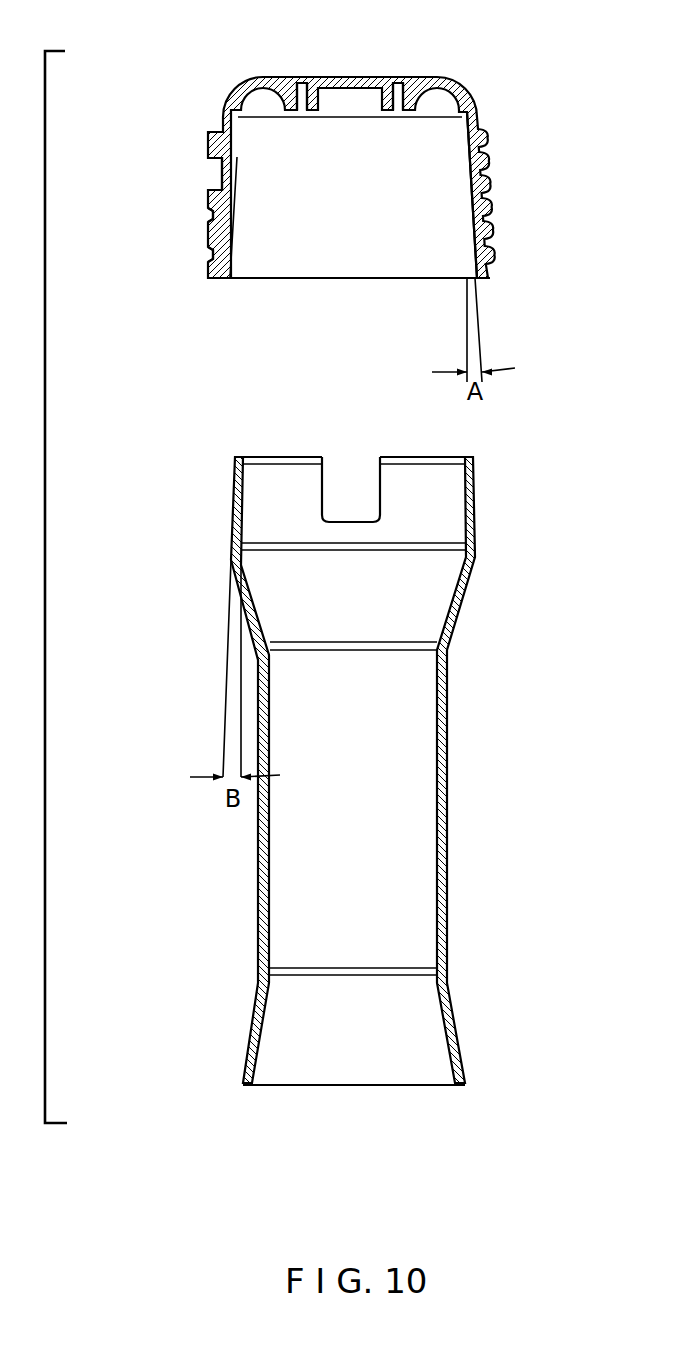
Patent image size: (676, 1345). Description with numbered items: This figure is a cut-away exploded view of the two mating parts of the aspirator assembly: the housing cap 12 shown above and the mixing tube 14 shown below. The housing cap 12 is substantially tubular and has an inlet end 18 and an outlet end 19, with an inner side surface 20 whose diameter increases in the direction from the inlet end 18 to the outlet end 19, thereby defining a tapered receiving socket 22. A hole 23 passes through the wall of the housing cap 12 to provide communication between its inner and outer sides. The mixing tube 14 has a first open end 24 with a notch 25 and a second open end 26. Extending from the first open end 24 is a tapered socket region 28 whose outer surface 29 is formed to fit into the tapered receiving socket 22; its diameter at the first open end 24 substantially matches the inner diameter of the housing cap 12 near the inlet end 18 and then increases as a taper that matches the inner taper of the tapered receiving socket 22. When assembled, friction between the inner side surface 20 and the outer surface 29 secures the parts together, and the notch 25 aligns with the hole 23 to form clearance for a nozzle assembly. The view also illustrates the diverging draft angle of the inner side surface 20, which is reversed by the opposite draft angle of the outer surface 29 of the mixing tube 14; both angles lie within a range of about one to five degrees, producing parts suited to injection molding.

The housing cap 12 is at (485, 163).
The mixing tube 14 is at (448, 853).
The inlet end 18 is at (400, 81).
The outlet end 19 is at (276, 266).
The inner side surface 20 is at (468, 190).
The tapered receiving socket 22 is at (207, 215).
The hole 23 is at (217, 180).
The first open end 24 is at (267, 485).
The notch 25 is at (377, 488).
The second open end 26 is at (393, 1080).
The tapered socket region 28 is at (228, 517).
The outer surface 29 is at (473, 510).